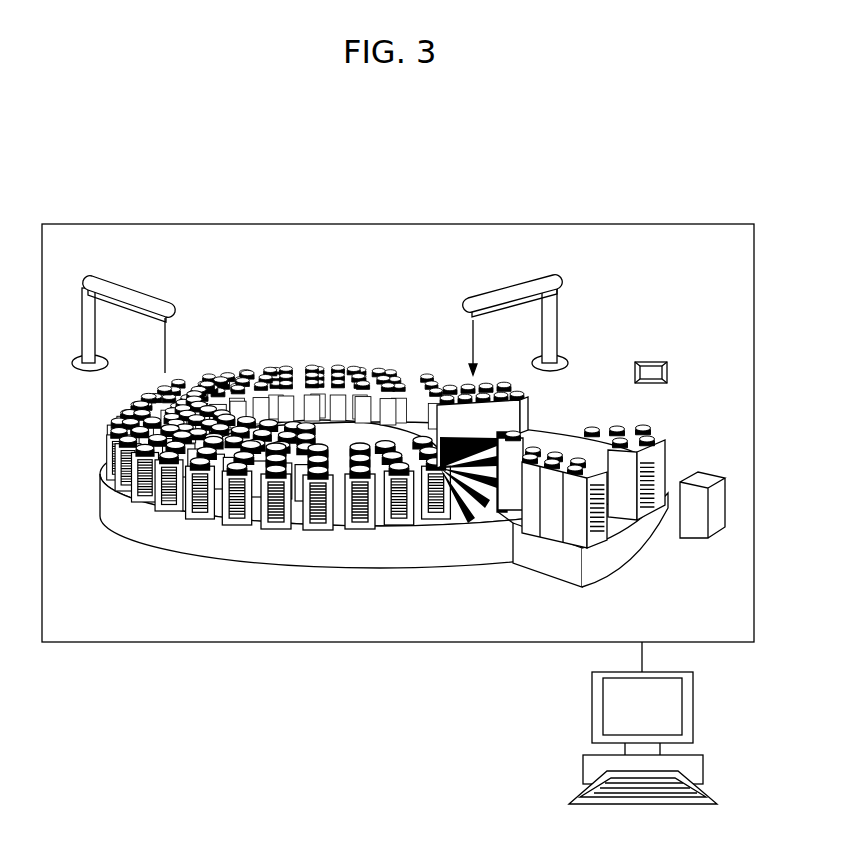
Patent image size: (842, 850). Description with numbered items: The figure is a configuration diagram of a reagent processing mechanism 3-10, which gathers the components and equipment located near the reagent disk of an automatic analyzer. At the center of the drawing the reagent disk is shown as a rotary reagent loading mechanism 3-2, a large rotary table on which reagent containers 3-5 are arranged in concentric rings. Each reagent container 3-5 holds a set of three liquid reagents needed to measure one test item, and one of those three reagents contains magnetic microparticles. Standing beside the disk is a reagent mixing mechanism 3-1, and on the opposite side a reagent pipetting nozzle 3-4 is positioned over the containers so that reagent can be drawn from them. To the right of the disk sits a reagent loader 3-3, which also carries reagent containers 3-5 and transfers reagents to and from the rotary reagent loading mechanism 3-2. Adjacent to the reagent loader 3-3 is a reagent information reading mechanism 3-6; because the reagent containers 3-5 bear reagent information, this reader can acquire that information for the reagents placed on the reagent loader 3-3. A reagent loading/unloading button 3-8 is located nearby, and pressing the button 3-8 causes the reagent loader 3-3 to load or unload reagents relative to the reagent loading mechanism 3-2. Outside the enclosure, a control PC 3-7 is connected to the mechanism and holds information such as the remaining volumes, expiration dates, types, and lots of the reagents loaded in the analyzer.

The reagent processing mechanism 3-10 is at (566, 224).
The reagent mixing mechanism 3-1 is at (556, 287).
The rotary reagent loading mechanism 3-2 is at (402, 553).
The reagent loader 3-3 is at (550, 562).
The reagent pipetting nozzle 3-4 is at (171, 307).
The reagent container 3-5 is at (668, 462).
The reagent information reading mechanism 3-6 is at (694, 542).
The control PC 3-7 is at (673, 706).
The reagent loading/unloading button 3-8 is at (668, 373).